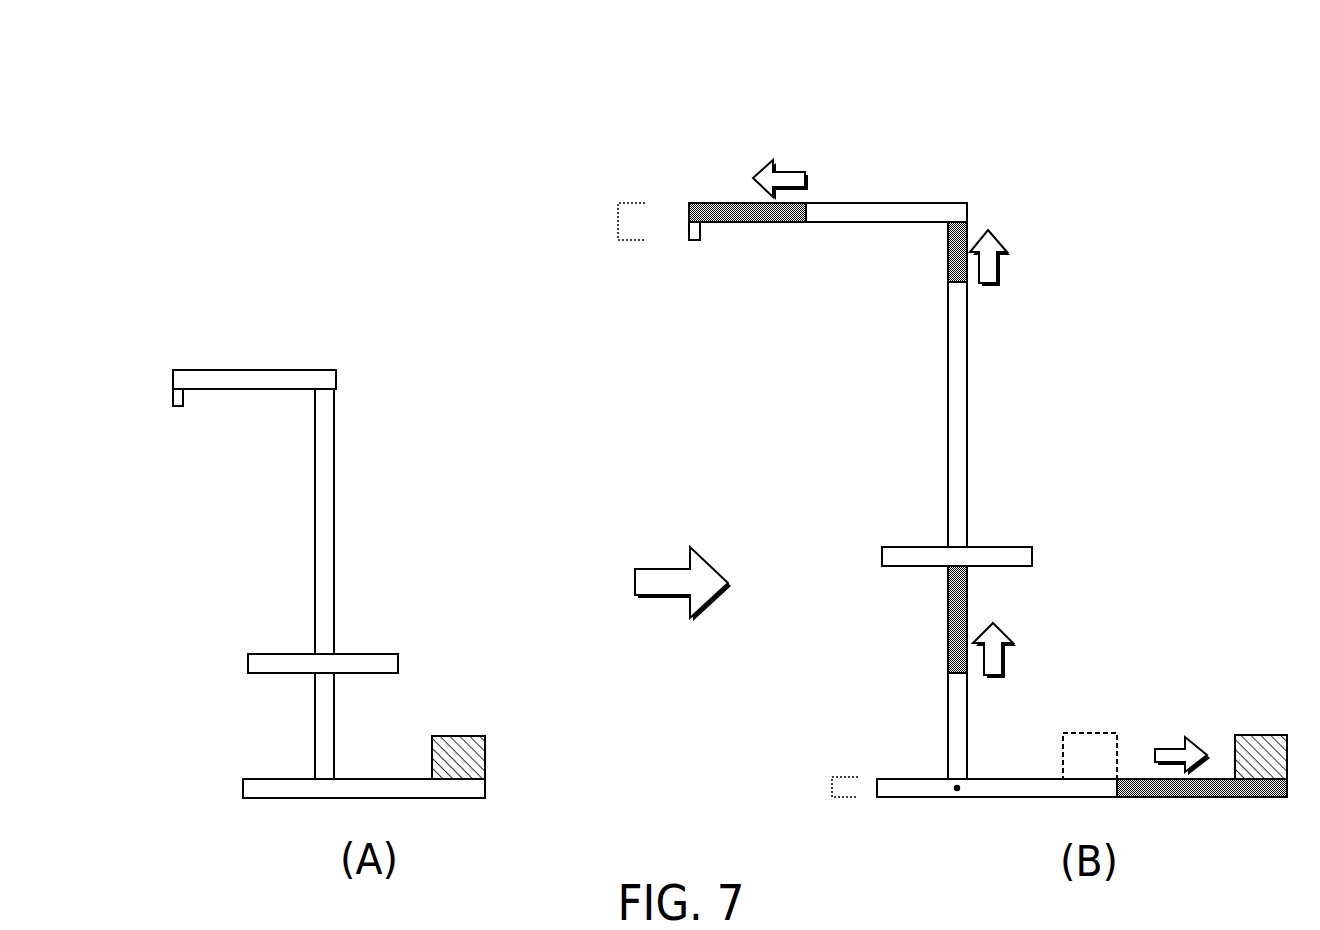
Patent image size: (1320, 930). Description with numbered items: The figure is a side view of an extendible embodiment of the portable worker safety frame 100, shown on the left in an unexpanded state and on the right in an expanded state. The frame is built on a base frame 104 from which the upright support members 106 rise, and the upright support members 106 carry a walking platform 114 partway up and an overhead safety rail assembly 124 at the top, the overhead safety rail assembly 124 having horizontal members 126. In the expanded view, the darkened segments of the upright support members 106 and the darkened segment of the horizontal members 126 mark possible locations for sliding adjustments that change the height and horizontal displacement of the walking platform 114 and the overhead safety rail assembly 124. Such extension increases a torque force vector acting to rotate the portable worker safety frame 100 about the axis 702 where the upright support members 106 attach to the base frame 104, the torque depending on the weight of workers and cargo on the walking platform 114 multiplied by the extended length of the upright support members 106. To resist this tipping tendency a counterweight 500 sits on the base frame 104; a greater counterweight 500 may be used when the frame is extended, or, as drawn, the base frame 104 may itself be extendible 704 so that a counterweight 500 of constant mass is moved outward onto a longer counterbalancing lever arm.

The portable worker safety frame 100 is at (260, 336).
The base frame 104 is at (831, 782).
The upright support members 106 is at (948, 406).
The walking platform 114 is at (887, 546).
The overhead safety rail assembly 124 is at (617, 221).
The horizontal members 126 is at (890, 223).
The counterweight 500 is at (1265, 734).
The axis 702 is at (955, 796).
The extendible base frame portion 704 is at (1213, 800).